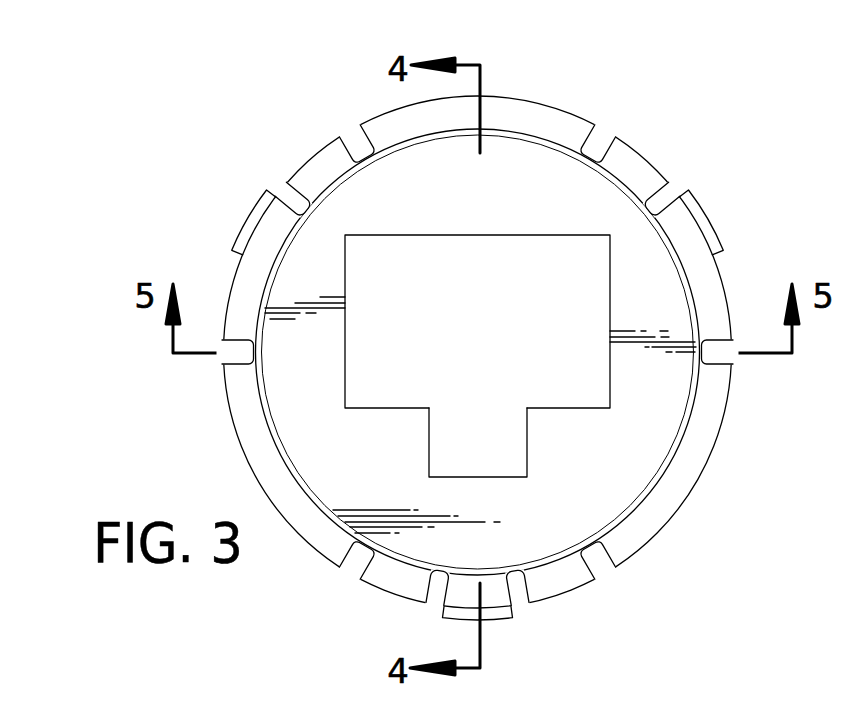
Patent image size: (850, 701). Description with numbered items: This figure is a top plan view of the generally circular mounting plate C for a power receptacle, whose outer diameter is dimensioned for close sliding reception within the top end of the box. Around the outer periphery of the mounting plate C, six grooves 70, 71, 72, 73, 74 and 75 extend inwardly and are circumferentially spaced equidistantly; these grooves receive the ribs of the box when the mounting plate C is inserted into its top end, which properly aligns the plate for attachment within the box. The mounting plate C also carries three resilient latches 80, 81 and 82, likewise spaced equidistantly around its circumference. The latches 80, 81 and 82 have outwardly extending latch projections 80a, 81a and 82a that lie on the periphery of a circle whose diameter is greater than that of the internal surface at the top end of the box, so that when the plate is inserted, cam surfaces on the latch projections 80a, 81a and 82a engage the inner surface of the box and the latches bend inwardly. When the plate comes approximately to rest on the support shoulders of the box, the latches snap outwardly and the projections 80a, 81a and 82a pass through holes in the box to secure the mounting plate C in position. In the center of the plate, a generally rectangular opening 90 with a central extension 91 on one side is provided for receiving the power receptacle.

The mounting plate C is at (655, 128).
The groove 70 is at (356, 577).
The groove 71 is at (228, 359).
The groove 72 is at (348, 142).
The groove 73 is at (602, 140).
The groove 74 is at (730, 360).
The groove 75 is at (604, 577).
The resilient latch 80 is at (514, 607).
The latch projection 80a is at (490, 612).
The resilient latch 81 is at (281, 203).
The latch projection 81a is at (255, 221).
The resilient latch 82 is at (681, 198).
The latch projection 82a is at (716, 226).
The rectangular opening 90 is at (470, 246).
The central extension 91 is at (517, 453).